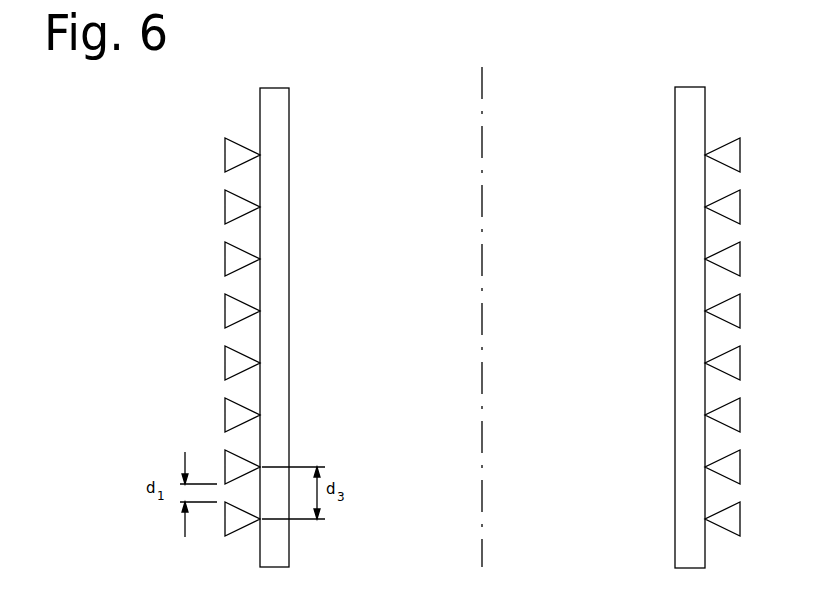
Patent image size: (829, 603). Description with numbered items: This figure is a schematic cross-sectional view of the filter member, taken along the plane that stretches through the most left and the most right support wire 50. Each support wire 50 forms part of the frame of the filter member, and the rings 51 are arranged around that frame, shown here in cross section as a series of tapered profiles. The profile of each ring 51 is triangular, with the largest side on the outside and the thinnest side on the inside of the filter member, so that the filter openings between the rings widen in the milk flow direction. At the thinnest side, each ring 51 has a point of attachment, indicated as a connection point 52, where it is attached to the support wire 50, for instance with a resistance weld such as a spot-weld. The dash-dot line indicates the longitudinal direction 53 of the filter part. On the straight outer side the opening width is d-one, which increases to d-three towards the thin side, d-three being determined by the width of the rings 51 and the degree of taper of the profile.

The support wire 50 is at (270, 93).
The ring 51 is at (232, 262).
The connection point 52 is at (258, 155).
The longitudinal direction 53 is at (483, 82).